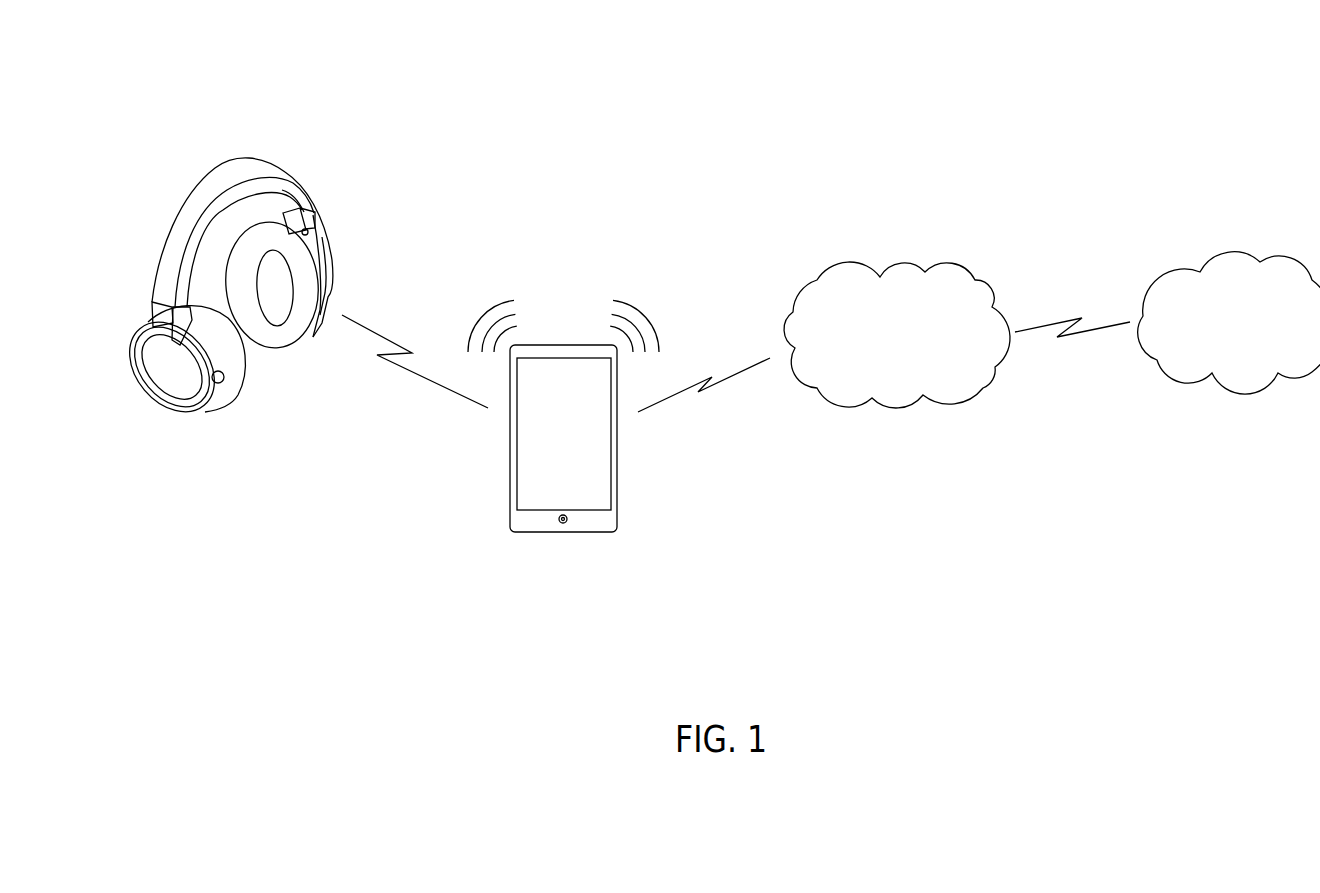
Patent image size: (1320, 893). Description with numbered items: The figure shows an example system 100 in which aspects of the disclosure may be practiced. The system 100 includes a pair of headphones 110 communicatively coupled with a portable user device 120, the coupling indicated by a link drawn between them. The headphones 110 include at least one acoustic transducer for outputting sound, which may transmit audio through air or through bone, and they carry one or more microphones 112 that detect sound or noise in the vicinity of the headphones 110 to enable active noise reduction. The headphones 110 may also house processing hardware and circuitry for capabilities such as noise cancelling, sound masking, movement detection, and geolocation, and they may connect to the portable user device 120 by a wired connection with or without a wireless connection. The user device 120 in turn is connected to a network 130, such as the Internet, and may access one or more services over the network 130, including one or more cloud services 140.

The system 100 is at (1122, 96).
The headphones 110 is at (245, 170).
The microphones 112 is at (224, 381).
The portable user device 120 is at (563, 533).
The network 130 is at (877, 368).
The cloud services 140 is at (1225, 352).